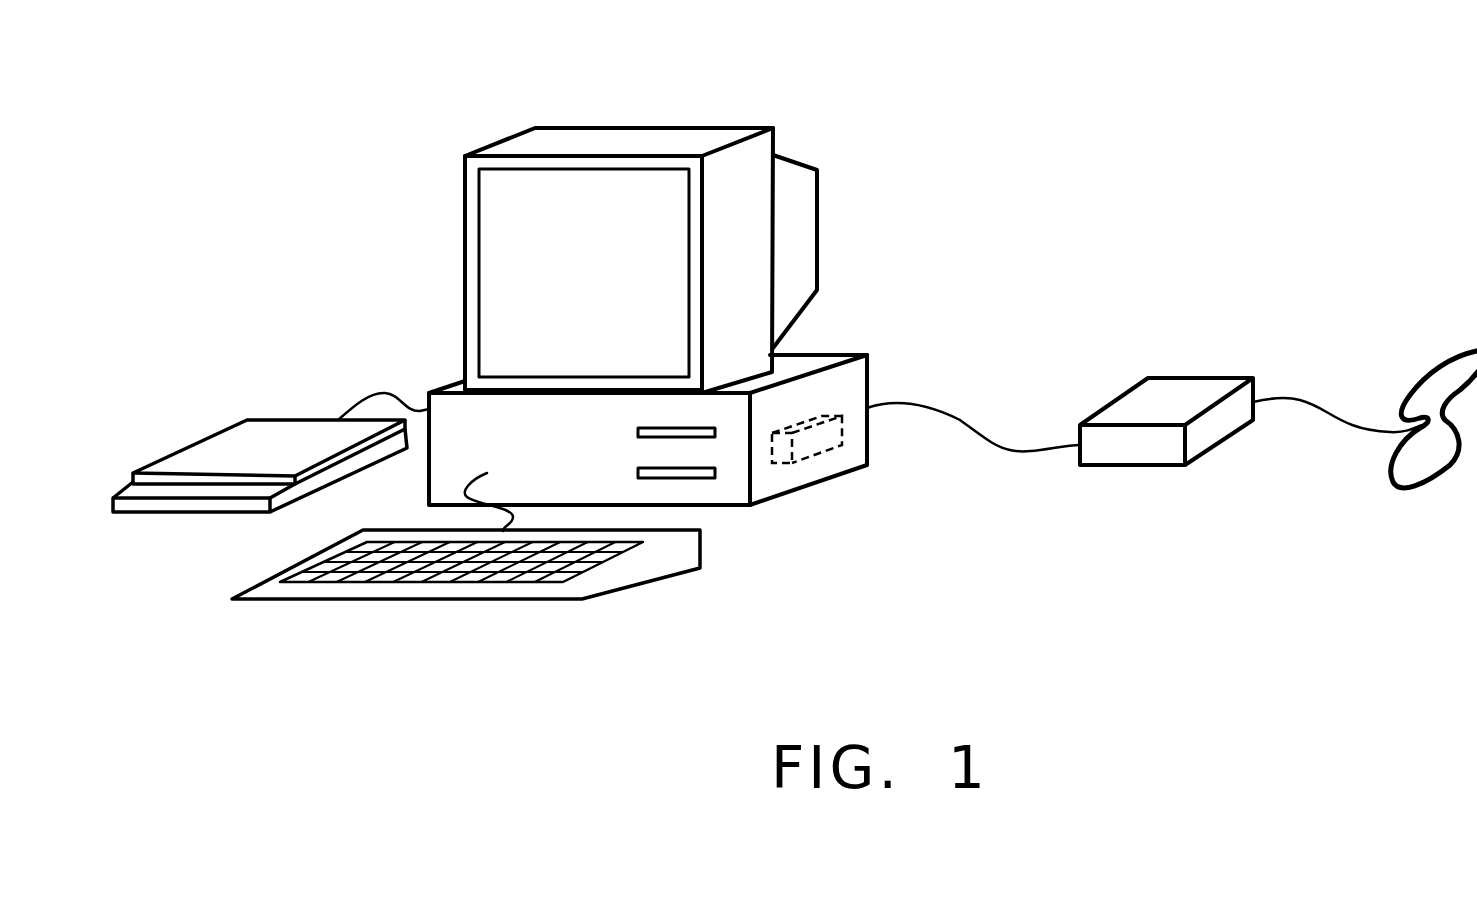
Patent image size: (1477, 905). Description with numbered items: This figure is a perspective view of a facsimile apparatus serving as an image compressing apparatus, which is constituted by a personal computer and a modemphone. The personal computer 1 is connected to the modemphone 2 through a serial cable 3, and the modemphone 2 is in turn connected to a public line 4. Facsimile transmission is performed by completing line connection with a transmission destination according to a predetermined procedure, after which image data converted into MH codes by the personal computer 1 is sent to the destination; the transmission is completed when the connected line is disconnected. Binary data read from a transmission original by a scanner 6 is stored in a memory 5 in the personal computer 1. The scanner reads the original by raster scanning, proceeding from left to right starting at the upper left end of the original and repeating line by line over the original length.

The personal computer 1 is at (499, 141).
The modemphone 2 is at (1197, 375).
The RS-232C cable 3 is at (1000, 443).
The public line 4 is at (1392, 482).
The memory 5 is at (807, 453).
The scanner 6 is at (178, 450).